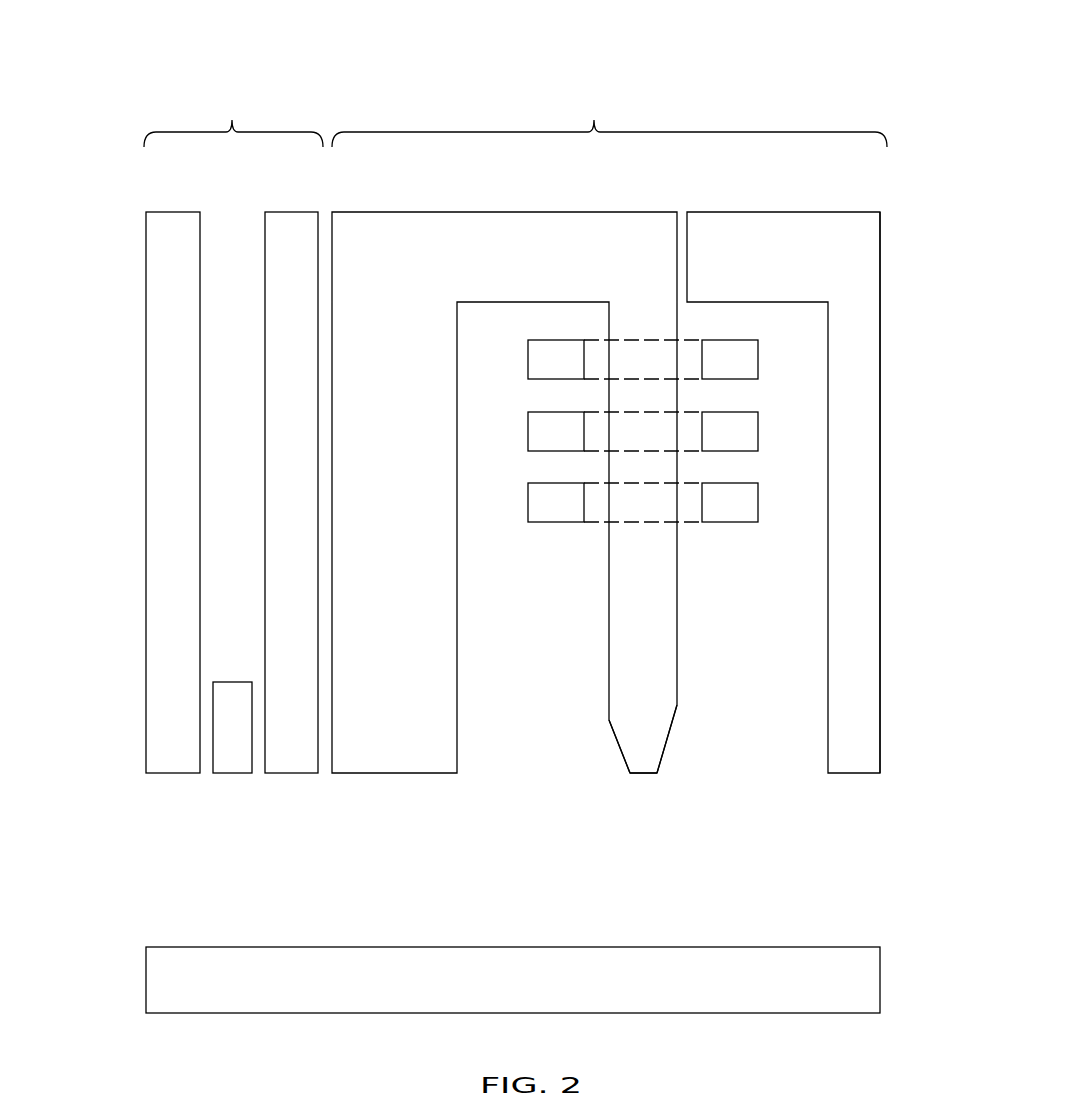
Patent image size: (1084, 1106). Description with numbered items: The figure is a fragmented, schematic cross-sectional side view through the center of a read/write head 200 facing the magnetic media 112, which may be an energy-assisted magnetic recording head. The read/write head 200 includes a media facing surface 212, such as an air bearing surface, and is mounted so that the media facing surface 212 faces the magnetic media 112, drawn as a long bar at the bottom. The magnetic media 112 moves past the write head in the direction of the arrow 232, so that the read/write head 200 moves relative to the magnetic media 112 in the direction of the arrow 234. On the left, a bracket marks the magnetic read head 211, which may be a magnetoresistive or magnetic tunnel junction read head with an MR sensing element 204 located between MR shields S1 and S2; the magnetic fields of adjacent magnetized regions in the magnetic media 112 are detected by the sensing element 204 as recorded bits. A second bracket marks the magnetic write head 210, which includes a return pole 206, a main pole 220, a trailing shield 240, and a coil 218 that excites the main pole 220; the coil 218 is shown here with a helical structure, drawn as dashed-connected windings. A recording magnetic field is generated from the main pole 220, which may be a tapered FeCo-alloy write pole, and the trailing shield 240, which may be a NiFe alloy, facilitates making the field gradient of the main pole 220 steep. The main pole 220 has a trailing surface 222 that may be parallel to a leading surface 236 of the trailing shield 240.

The read/write head 200 is at (147, 42).
The magnetic read head 211 is at (233, 119).
The magnetic write head 210 is at (609, 119).
The MR shield S1 is at (172, 773).
The MR sensing element 204 is at (235, 773).
The MR shield S2 is at (297, 773).
The return pole 206 is at (395, 773).
The main pole 220 is at (622, 730).
The trailing surface 222 is at (677, 688).
The media facing surface 212 is at (645, 773).
The coil 218 is at (557, 522).
The leading surface 236 is at (828, 603).
The trailing shield 240 is at (881, 733).
The arrow 234 is at (48, 405).
The arrow 232 is at (712, 923).
The magnetic media 112 is at (882, 978).